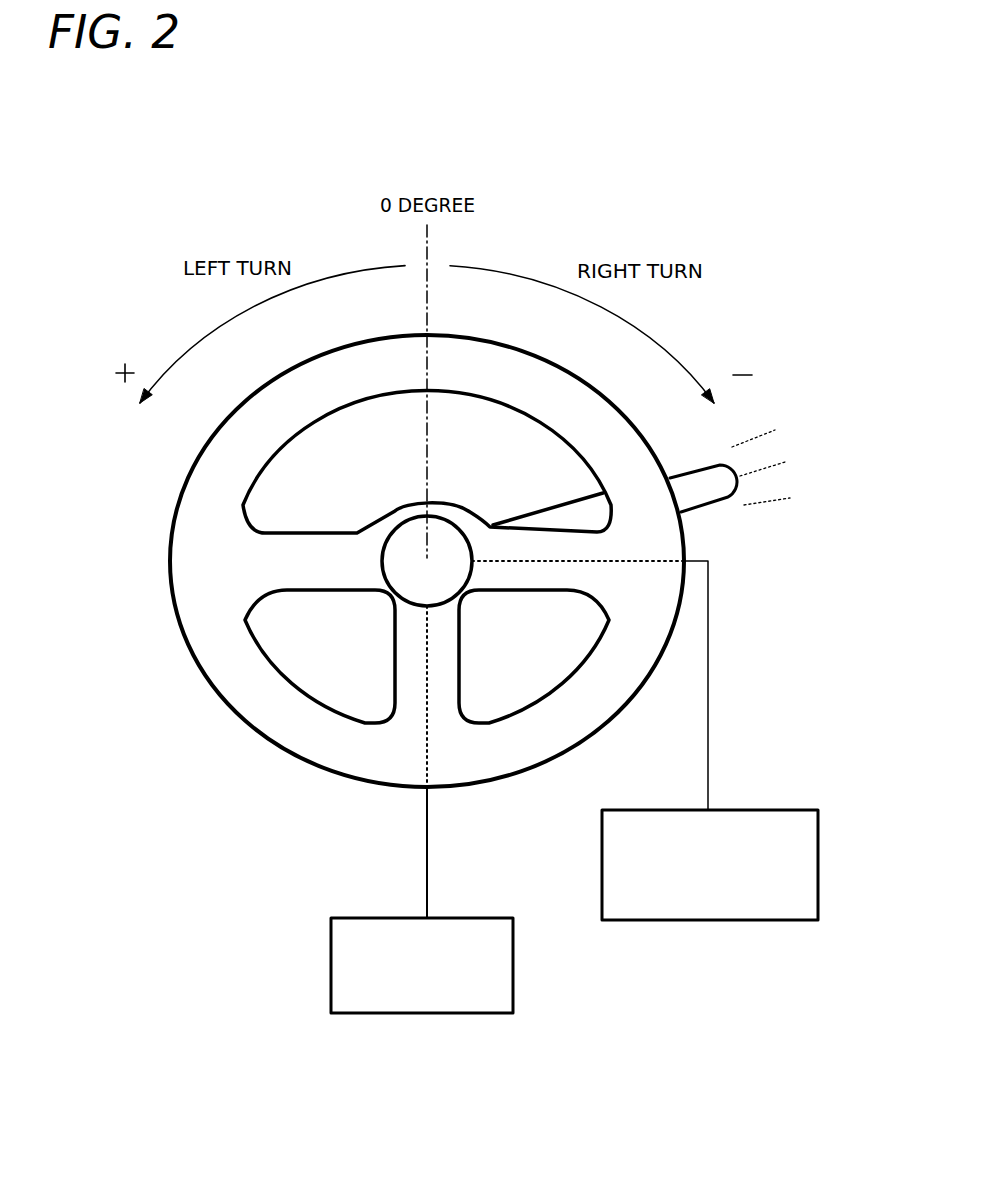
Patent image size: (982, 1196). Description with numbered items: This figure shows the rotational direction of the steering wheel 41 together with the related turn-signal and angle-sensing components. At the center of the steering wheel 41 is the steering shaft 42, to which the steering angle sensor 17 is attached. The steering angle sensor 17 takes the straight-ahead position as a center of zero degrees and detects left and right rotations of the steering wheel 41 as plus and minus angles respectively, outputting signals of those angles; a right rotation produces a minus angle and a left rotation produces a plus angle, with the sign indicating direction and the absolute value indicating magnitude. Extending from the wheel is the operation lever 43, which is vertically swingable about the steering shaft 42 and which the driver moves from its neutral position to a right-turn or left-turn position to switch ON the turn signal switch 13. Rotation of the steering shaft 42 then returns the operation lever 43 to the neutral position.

The turn signal switch 13 is at (777, 810).
The steering angle sensor 17 is at (331, 978).
The steering wheel 41 is at (207, 691).
The steering shaft 42 is at (398, 583).
The operation lever 43 is at (727, 497).